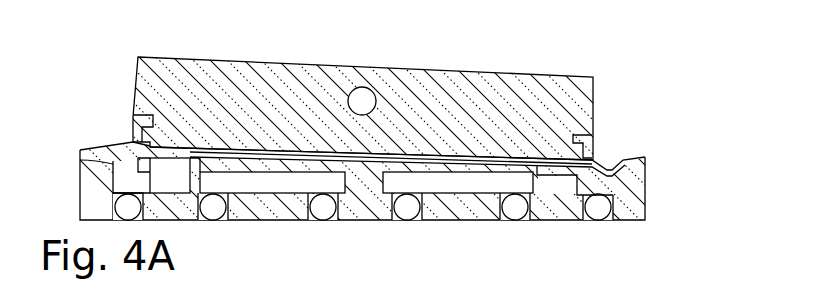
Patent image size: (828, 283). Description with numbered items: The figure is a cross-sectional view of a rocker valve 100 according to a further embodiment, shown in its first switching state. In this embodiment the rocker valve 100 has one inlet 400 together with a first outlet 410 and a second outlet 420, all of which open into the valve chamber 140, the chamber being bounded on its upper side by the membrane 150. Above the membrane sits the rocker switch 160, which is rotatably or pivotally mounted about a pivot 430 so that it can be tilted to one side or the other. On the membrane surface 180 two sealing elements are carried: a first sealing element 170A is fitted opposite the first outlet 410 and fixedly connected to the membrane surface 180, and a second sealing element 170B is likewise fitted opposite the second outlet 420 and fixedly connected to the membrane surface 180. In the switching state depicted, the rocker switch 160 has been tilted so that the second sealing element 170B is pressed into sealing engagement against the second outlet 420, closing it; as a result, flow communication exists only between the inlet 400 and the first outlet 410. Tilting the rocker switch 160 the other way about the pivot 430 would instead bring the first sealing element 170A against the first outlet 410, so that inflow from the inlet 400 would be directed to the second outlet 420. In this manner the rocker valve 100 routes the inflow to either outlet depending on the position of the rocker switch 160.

The rocker valve 100 is at (108, 84).
The membrane 150 is at (405, 141).
The rocker switch 160 is at (433, 100).
The pivot 430 is at (364, 100).
The first sealing element 170A is at (168, 143).
The second sealing element 170B is at (592, 143).
The valve chamber 140 is at (295, 140).
The membrane surface 180 is at (237, 150).
The inlet 400 is at (414, 141).
The first outlet 410 is at (173, 209).
The second outlet 420 is at (552, 209).